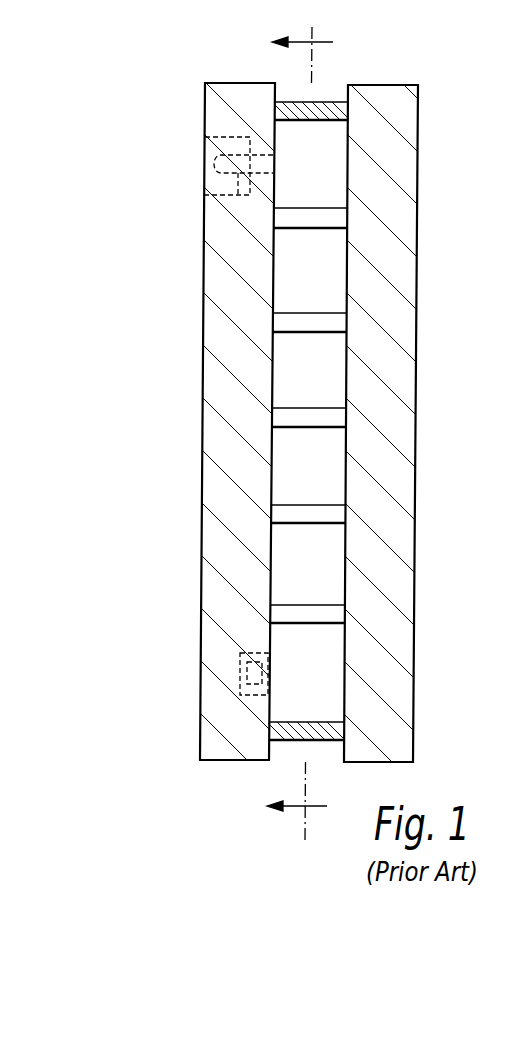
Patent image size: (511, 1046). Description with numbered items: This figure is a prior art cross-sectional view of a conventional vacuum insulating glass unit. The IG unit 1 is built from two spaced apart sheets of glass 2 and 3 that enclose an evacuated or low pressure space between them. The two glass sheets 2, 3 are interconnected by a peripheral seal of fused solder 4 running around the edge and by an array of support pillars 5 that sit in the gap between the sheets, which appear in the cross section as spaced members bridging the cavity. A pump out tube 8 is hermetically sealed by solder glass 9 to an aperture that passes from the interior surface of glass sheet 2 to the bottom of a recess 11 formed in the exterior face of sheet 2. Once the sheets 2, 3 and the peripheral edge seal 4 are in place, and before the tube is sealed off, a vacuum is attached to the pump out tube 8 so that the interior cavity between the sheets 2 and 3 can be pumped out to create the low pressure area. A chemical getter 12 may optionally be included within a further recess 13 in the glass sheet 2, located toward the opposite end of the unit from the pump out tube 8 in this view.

The IG unit 1 is at (310, 421).
The sheet of glass 2 is at (213, 489).
The sheet of glass 3 is at (388, 318).
The peripheral seal of fused solder 4 is at (320, 112).
The support pillars 5 is at (297, 615).
The pump out tube 8 is at (215, 165).
The solder glass 9 is at (244, 145).
The recess 11 is at (228, 192).
The chemical getter 12 is at (256, 674).
The recess 13 is at (241, 706).